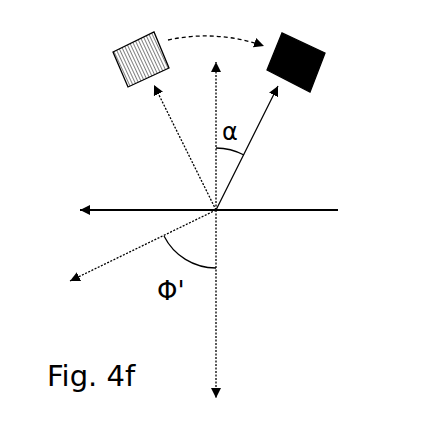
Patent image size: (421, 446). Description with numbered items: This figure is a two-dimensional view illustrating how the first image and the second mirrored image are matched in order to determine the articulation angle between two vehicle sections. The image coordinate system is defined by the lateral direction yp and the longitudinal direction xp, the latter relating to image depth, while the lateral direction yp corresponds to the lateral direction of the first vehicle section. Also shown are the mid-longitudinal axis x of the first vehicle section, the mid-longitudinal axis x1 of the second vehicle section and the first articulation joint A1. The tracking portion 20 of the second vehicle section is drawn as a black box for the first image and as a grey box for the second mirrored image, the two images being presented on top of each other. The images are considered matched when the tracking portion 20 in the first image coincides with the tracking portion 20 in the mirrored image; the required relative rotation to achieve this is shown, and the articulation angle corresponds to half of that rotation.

The tracking portion 20 is at (113, 63).
The first articulation joint A1 is at (235, 228).
The mid-longitudinal axis of the second vehicle section x1 is at (229, 147).
The longitudinal direction of the images xp is at (236, 130).
The lateral direction of the images yp is at (143, 245).
The mid-longitudinal axis of the first vehicle section x is at (231, 304).